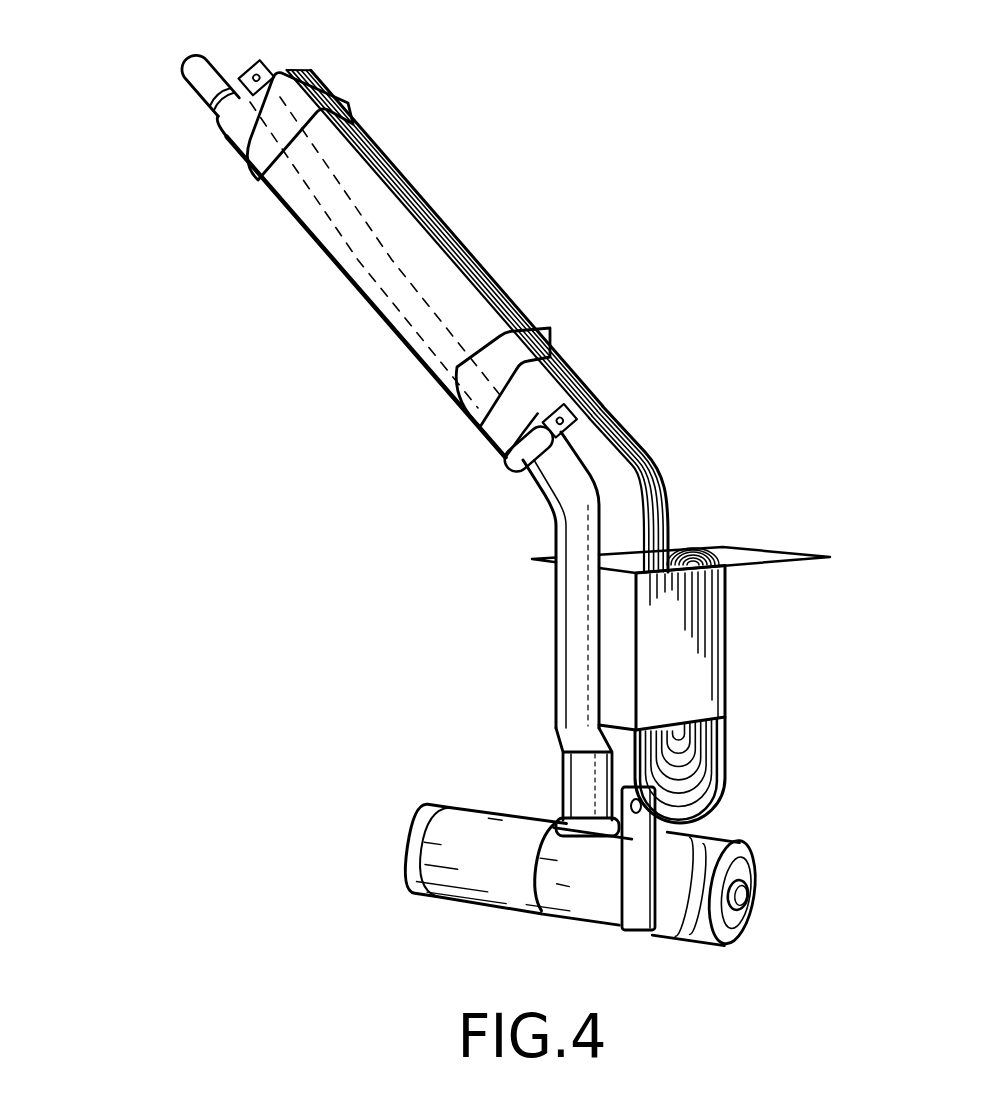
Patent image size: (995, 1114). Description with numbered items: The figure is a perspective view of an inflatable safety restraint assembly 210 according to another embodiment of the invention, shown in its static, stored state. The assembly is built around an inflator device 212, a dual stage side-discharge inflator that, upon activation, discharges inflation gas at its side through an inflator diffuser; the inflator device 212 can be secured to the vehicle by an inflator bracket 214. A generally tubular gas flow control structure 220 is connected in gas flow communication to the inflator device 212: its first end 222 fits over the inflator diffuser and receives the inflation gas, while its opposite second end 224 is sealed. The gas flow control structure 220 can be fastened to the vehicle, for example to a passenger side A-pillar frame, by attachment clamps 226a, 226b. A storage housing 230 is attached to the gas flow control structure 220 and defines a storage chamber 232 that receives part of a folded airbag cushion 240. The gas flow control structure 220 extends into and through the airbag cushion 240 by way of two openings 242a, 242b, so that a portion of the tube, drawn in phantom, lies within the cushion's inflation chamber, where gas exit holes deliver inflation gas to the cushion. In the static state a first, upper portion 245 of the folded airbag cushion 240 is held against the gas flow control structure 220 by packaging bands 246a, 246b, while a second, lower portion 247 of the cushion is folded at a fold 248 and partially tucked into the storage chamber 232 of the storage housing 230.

The inflatable safety restraint assembly 210 is at (212, 687).
The inflator device 212 is at (446, 812).
The inflator bracket 214 is at (662, 830).
The gas flow control structure 220 is at (556, 508).
The first end 222 is at (560, 830).
The second end 224 is at (190, 75).
The attachment clamp 226a is at (268, 62).
The attachment clamp 226b is at (530, 464).
The storage housing 230 is at (727, 670).
The storage chamber 232 is at (723, 535).
The airbag cushion 240 is at (666, 478).
The opening 242a is at (222, 128).
The opening 242b is at (514, 460).
The first, upper portion 245 is at (512, 282).
The packaging band 246a is at (354, 104).
The packaging band 246b is at (549, 334).
The second, lower portion 247 is at (736, 738).
The fold 248 is at (722, 790).